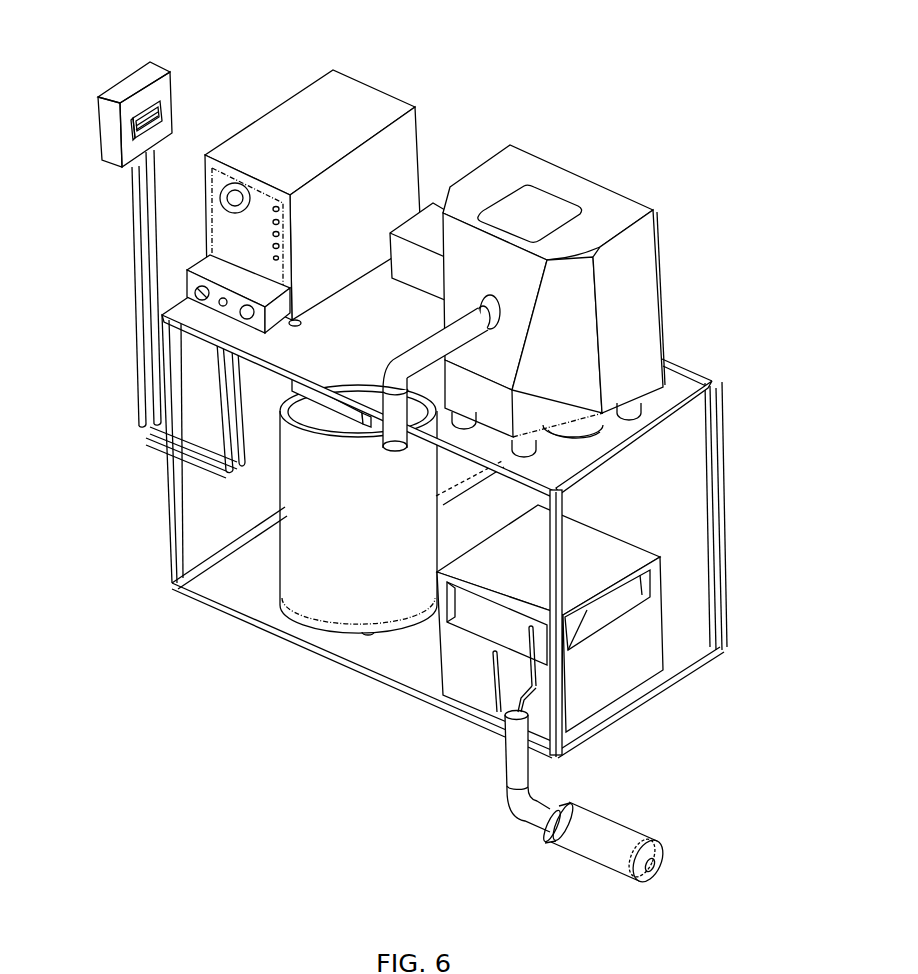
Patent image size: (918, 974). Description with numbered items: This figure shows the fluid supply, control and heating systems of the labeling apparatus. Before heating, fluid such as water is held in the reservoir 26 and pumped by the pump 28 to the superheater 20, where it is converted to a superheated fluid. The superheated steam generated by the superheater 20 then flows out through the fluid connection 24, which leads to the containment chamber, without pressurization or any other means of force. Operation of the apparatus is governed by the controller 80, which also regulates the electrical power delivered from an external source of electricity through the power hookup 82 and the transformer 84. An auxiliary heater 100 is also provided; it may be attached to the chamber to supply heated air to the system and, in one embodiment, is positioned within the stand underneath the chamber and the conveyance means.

The fluid superheater 20 is at (602, 175).
The fluid connection 24 is at (403, 340).
The reservoir 26 is at (302, 580).
The pump 28 is at (326, 420).
The controller 80 is at (305, 140).
The power hookup 82 is at (108, 80).
The transformer 84 is at (630, 690).
The auxiliary heater 100 is at (680, 847).